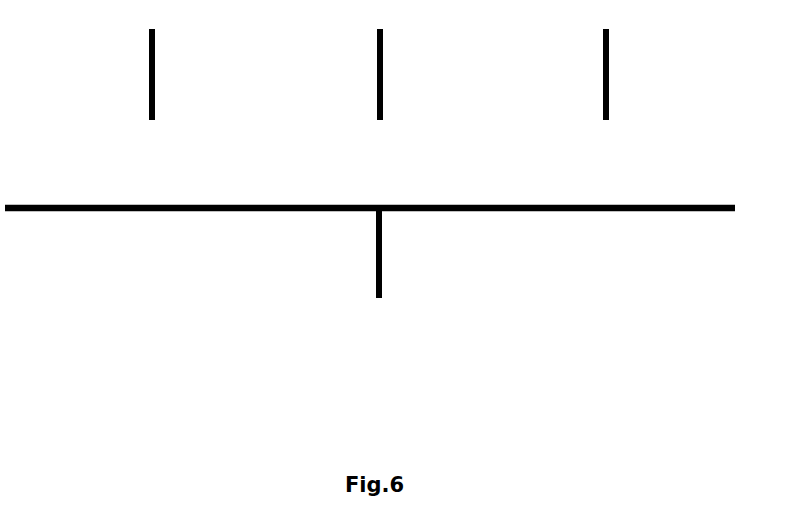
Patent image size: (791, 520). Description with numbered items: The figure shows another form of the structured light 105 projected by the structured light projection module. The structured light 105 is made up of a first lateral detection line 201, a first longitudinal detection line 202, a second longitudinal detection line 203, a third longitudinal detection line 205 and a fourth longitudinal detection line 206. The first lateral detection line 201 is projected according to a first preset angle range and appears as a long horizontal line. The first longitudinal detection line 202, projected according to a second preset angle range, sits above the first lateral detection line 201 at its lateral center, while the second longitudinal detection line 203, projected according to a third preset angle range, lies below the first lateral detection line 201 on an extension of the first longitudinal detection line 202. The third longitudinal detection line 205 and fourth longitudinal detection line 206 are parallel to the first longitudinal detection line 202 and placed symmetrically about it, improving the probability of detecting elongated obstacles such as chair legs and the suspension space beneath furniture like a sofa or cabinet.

The first lateral detection line 201 is at (132, 211).
The first longitudinal detection line 202 is at (378, 64).
The second longitudinal detection line 203 is at (376, 272).
The third longitudinal detection line 205 is at (143, 70).
The fourth longitudinal detection line 206 is at (603, 75).
The structured light 105 is at (402, 415).